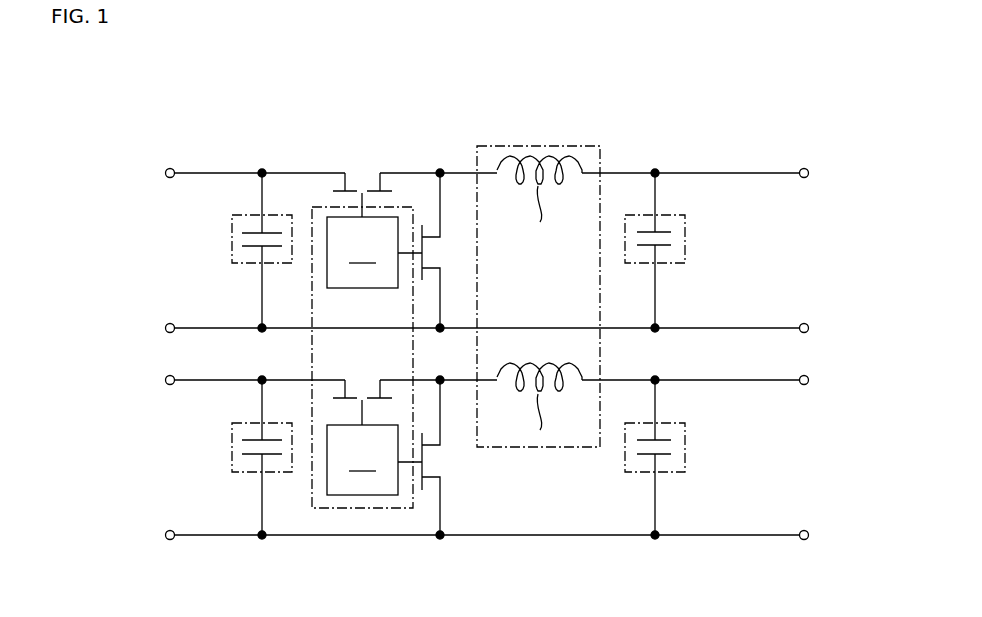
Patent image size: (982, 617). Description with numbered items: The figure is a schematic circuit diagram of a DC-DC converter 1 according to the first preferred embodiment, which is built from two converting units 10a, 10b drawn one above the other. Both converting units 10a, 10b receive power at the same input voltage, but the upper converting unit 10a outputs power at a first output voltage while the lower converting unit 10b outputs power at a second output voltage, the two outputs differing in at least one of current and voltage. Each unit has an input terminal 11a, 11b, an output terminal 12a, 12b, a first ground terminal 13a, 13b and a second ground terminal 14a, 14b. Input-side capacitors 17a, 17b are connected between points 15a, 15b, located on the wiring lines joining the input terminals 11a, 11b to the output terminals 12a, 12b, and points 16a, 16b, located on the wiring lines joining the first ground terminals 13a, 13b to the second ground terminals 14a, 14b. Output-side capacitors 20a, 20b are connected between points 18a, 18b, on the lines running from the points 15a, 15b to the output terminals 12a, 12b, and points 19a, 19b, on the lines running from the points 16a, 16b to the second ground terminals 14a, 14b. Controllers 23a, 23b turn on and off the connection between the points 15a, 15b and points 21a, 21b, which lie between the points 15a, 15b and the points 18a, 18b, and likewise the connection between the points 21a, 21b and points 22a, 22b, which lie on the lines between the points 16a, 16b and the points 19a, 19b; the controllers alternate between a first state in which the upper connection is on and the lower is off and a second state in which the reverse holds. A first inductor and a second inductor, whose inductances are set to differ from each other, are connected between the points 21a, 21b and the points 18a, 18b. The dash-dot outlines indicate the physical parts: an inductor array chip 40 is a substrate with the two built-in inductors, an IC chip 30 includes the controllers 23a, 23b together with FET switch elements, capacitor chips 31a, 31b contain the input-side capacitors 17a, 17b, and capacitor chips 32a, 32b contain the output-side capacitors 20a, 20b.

The DC-DC converter 1 is at (770, 130).
The converting unit 10a is at (628, 163).
The converting unit 10b is at (587, 548).
The input terminal 11a is at (166, 176).
The input terminal 11b is at (166, 383).
The output terminal 12a is at (809, 175).
The output terminal 12b is at (809, 382).
The first ground terminal 13a is at (166, 328).
The first ground terminal 13b is at (166, 535).
The second ground terminal 14a is at (809, 328).
The second ground terminal 14b is at (809, 535).
The point 15a is at (263, 170).
The point 15b is at (264, 379).
The point 16a is at (263, 325).
The point 16b is at (264, 538).
The input-side capacitor 17a is at (250, 232).
The input-side capacitor 17b is at (250, 439).
The point 18a is at (657, 171).
The point 18b is at (657, 378).
The point 19a is at (657, 326).
The point 19b is at (657, 533).
The output-side capacitor 20a is at (671, 232).
The output-side capacitor 20b is at (671, 440).
The point 21a is at (441, 170).
The point 21b is at (440, 379).
The point 22a is at (440, 330).
The point 22b is at (442, 533).
The controller 23a is at (362, 252).
The controller 23b is at (362, 460).
The IC chip 30 is at (393, 207).
The capacitor chip 31a is at (232, 263).
The capacitor chip 31b is at (232, 472).
The capacitor chip 32a is at (685, 262).
The capacitor chip 32b is at (685, 471).
The inductor array chip 40 is at (592, 146).